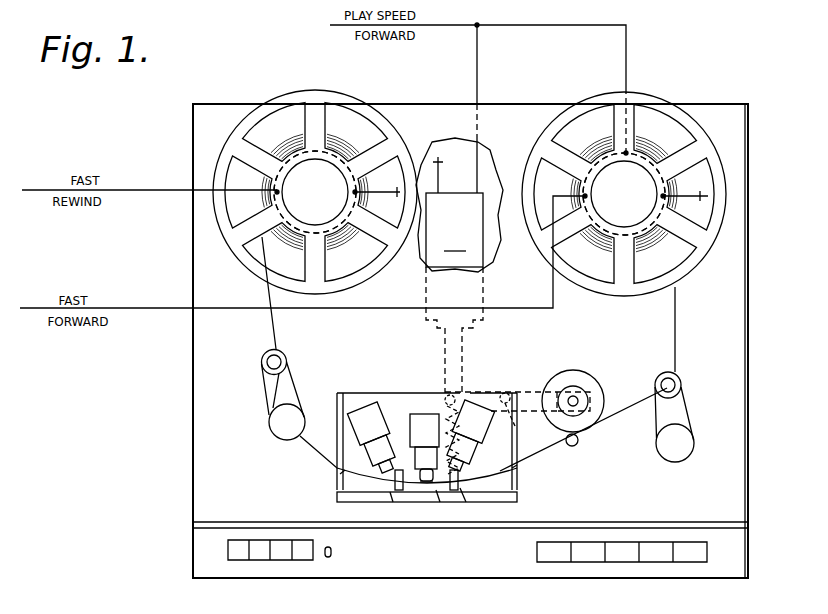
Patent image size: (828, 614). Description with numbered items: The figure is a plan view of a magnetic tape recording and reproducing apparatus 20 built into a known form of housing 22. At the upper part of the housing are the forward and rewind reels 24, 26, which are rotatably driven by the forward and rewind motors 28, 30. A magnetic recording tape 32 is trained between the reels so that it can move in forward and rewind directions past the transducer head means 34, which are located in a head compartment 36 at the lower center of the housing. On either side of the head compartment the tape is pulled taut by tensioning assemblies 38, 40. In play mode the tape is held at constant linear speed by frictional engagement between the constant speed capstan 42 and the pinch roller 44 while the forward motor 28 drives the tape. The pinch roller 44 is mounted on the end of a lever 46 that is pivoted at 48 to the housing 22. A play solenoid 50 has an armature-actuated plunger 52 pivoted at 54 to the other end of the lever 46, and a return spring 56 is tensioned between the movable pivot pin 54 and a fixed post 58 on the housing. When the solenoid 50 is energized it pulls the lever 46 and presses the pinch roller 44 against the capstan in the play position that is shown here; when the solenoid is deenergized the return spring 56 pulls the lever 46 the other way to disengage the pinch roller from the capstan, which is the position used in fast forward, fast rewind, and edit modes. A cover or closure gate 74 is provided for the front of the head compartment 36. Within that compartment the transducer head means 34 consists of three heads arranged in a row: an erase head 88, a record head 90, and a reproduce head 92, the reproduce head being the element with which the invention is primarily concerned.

The recording and reproducing apparatus 20 is at (752, 102).
The housing 22 is at (749, 322).
The forward reel 24 is at (666, 100).
The rewind reel 26 is at (285, 96).
The forward motor 28 is at (601, 158).
The rewind motor 30 is at (337, 158).
The magnetic recording tape 32 is at (556, 445).
The transducer head means 34 is at (428, 413).
The head compartment 36 is at (343, 394).
The tensioning assembly 38 is at (697, 411).
The tensioning assembly 40 is at (263, 396).
The constant speed capstan 42 is at (578, 447).
The pinch roller 44 is at (598, 388).
The lever 46 is at (528, 392).
The pivot 48 is at (514, 430).
The play solenoid 50 is at (459, 205).
The armature-actuated plunger 52 is at (445, 338).
The movable pivot pin 54 is at (456, 402).
The return spring 56 is at (464, 492).
The fixed post 58 is at (441, 492).
The cover gate 74 is at (392, 502).
The erase head 88 is at (345, 474).
The record head 90 is at (424, 482).
The reproduce head 92 is at (505, 470).